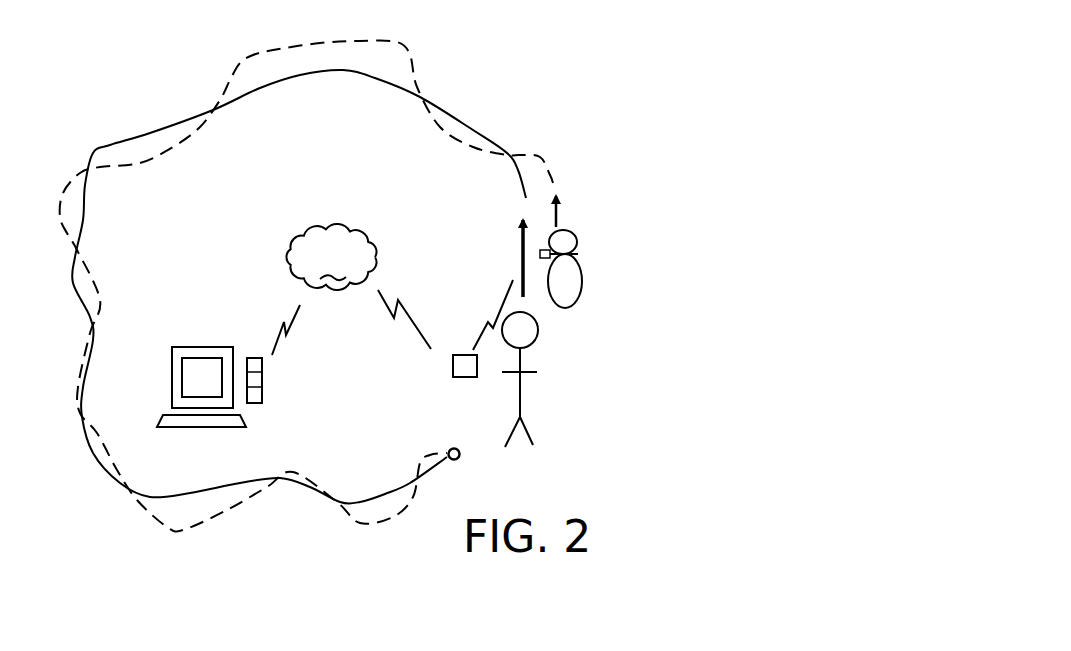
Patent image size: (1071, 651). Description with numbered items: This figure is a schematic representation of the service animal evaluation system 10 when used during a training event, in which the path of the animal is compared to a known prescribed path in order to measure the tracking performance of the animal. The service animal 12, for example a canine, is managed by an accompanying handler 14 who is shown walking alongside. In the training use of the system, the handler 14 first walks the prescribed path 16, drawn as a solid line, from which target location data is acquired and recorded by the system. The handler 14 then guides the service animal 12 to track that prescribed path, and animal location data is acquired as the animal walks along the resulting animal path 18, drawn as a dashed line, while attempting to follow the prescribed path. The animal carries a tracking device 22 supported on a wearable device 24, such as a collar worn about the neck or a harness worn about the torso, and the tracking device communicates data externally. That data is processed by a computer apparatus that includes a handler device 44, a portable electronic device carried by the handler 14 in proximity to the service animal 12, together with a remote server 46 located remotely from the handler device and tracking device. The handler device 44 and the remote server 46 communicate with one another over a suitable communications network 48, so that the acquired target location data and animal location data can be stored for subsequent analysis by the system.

The service animal evaluation system 10 is at (708, 117).
The service animal 12 is at (570, 287).
The handler 14 is at (522, 393).
The prescribed path 16 is at (472, 128).
The animal path 18 is at (238, 70).
The tracking device 22 is at (498, 246).
The wearable device 24 is at (575, 252).
The handler device 44 is at (460, 377).
The remote server 46 is at (178, 341).
The communications network 48 is at (324, 289).